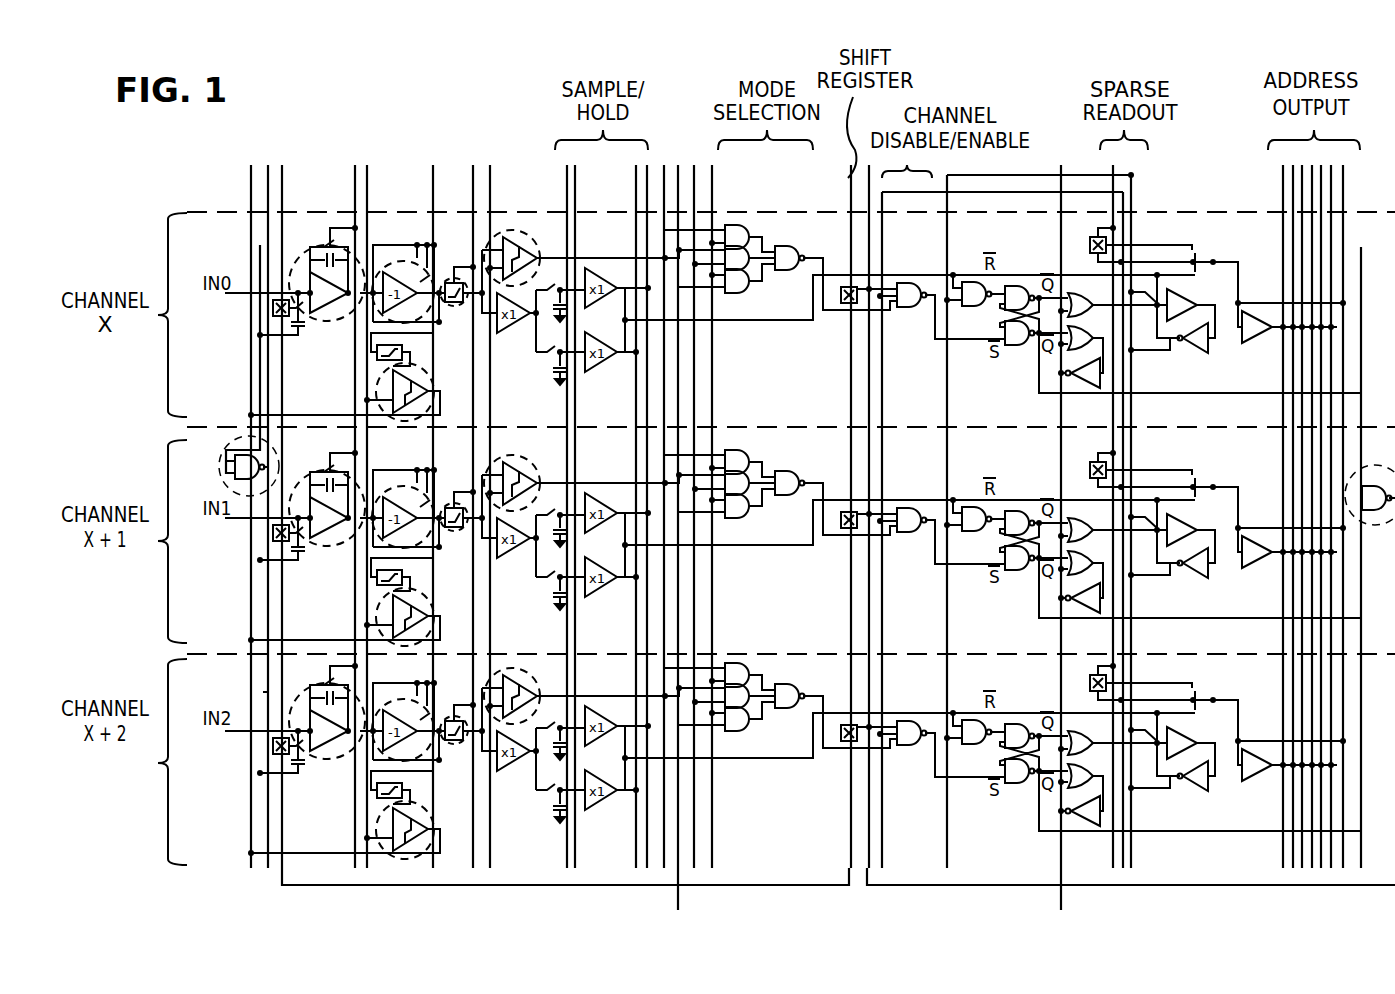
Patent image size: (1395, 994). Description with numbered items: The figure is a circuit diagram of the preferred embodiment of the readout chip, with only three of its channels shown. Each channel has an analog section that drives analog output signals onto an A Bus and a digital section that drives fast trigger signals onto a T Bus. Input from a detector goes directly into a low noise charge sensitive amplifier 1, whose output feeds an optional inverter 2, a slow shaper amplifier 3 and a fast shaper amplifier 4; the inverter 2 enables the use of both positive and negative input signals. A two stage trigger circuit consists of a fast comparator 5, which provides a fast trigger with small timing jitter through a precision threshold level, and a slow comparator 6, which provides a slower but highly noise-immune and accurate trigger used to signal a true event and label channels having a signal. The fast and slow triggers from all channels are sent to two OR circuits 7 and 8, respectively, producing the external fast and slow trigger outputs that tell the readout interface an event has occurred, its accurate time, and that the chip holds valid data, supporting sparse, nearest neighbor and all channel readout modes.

The charge sensitive amplifier 1 is at (318, 235).
The inverter 2 is at (388, 242).
The slow shaper amplifier 3 is at (453, 272).
The fast shaper amplifier 4 is at (377, 352).
The fast comparator 5 is at (393, 373).
The slow comparator 6 is at (506, 231).
The OR circuit 7 is at (218, 473).
The OR circuit 8 is at (1371, 526).